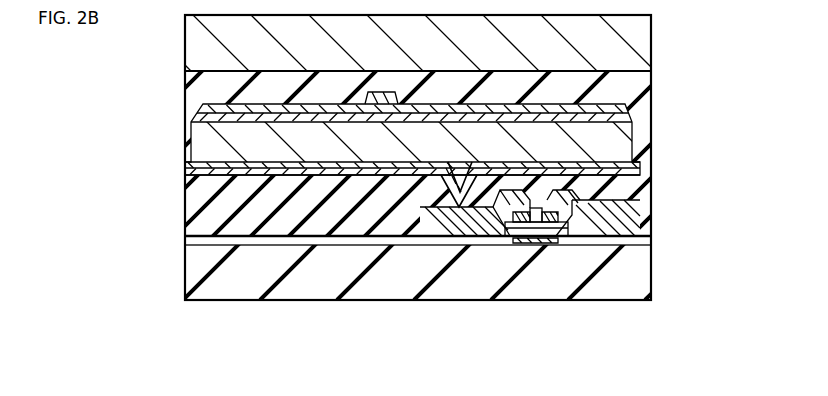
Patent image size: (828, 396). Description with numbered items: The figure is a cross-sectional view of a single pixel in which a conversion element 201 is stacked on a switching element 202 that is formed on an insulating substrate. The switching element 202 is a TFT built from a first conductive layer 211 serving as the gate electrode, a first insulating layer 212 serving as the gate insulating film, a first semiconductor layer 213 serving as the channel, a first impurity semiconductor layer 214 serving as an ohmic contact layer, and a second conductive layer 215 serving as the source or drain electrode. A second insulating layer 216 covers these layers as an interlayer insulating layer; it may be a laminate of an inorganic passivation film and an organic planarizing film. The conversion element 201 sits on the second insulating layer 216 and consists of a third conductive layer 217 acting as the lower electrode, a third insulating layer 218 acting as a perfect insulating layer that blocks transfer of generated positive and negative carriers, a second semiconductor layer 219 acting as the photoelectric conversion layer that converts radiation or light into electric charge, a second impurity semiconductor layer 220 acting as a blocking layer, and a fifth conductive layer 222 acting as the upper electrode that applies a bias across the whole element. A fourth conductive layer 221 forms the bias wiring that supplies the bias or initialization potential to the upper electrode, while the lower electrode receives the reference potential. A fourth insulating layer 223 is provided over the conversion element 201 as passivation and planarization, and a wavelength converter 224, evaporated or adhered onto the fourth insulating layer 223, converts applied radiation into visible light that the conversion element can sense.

The conversion element 201 is at (341, 334).
The switching element 202 is at (632, 334).
The first conductive layer 211 is at (535, 224).
The first insulating layer 212 is at (499, 238).
The first semiconductor layer 213 is at (550, 220).
The first impurity semiconductor layer 214 is at (560, 226).
The second conductive layer 215 is at (453, 228).
The second insulating layer 216 is at (372, 222).
The third conductive layer 217 is at (323, 176).
The third insulating layer 218 is at (298, 165).
The second semiconductor layer 219 is at (262, 153).
The second impurity semiconductor layer 220 is at (232, 118).
The fourth conductive layer 221 is at (384, 106).
The fifth conductive layer 222 is at (202, 113).
The fourth insulating layer 223 is at (186, 89).
The wavelength converter 224 is at (638, 36).